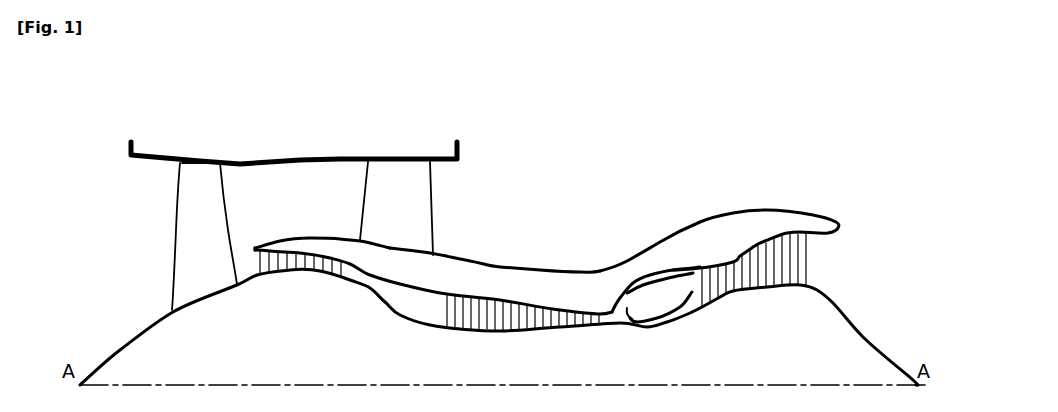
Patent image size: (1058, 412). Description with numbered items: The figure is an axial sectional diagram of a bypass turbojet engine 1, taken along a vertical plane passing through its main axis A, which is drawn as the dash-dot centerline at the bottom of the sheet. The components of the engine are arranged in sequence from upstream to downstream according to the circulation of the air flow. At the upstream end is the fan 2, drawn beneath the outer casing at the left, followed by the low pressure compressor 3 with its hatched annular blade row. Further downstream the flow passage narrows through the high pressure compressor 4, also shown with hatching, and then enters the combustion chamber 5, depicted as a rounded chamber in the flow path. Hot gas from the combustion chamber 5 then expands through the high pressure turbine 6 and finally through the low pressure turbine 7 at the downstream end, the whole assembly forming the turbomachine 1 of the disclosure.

The bypass turbojet engine 1 is at (547, 160).
The fan 2 is at (147, 192).
The low pressure compressor 3 is at (290, 237).
The high pressure compressor 4 is at (497, 298).
The combustion chamber 5 is at (648, 293).
The high pressure turbine 6 is at (715, 252).
The low pressure turbine 7 is at (773, 200).